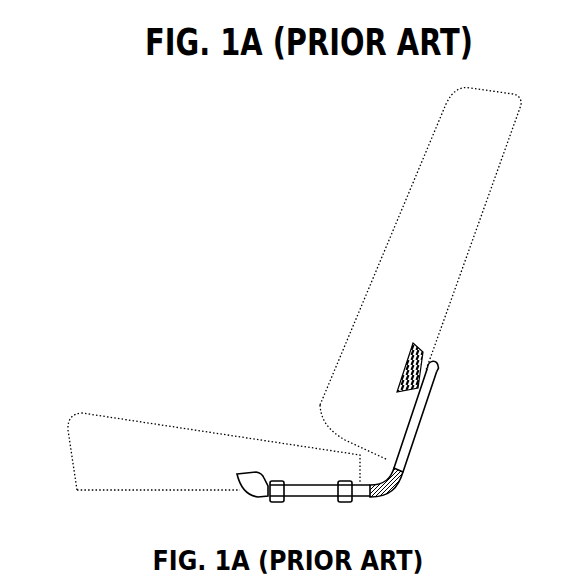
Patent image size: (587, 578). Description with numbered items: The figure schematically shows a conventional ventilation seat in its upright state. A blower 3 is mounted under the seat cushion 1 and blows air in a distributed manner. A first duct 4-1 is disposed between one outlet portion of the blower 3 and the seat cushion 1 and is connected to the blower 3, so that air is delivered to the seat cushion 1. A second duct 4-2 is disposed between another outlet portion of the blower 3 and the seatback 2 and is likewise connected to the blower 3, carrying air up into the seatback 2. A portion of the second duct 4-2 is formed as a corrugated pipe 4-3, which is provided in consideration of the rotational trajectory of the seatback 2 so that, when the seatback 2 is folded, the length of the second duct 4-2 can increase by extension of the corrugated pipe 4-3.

The seat cushion 1 is at (137, 415).
The seatback 2 is at (473, 235).
The blower 3 is at (312, 490).
The first duct 4-1 is at (258, 476).
The second duct 4-2 is at (418, 412).
The corrugated pipe 4-3 is at (393, 490).